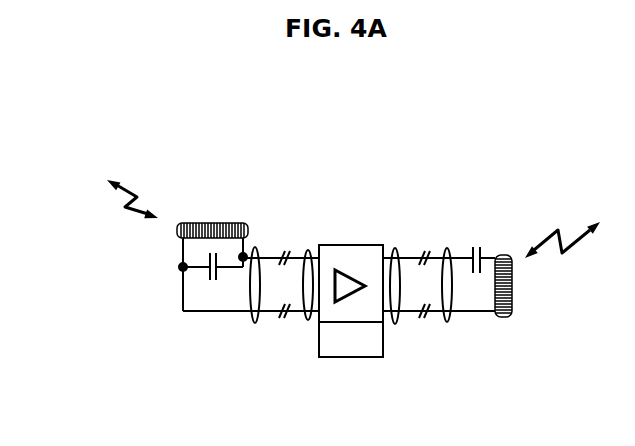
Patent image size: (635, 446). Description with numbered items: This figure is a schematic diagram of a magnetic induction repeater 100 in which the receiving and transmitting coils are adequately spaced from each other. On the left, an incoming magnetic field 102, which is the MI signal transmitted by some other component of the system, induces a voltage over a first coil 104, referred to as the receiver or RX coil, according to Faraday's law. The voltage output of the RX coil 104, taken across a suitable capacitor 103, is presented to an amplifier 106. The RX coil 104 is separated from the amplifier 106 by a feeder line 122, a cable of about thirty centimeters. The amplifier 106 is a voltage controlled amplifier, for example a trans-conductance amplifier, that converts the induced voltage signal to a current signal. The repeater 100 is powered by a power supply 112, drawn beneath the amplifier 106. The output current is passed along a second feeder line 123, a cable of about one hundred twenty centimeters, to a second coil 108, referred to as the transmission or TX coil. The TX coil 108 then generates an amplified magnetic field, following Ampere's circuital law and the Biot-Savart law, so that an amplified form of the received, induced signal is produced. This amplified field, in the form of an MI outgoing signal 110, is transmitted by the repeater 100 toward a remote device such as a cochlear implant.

The repeater 100 is at (258, 405).
The magnetic field 102 is at (140, 188).
The capacitor 103 is at (215, 288).
The first coil 104 is at (219, 222).
The amplifier 106 is at (352, 245).
The second coil 108 is at (515, 255).
The MI outgoing signal 110 is at (570, 228).
The power supply 112 is at (383, 345).
The feeder line 122 is at (270, 250).
The feeder line 123 is at (413, 250).